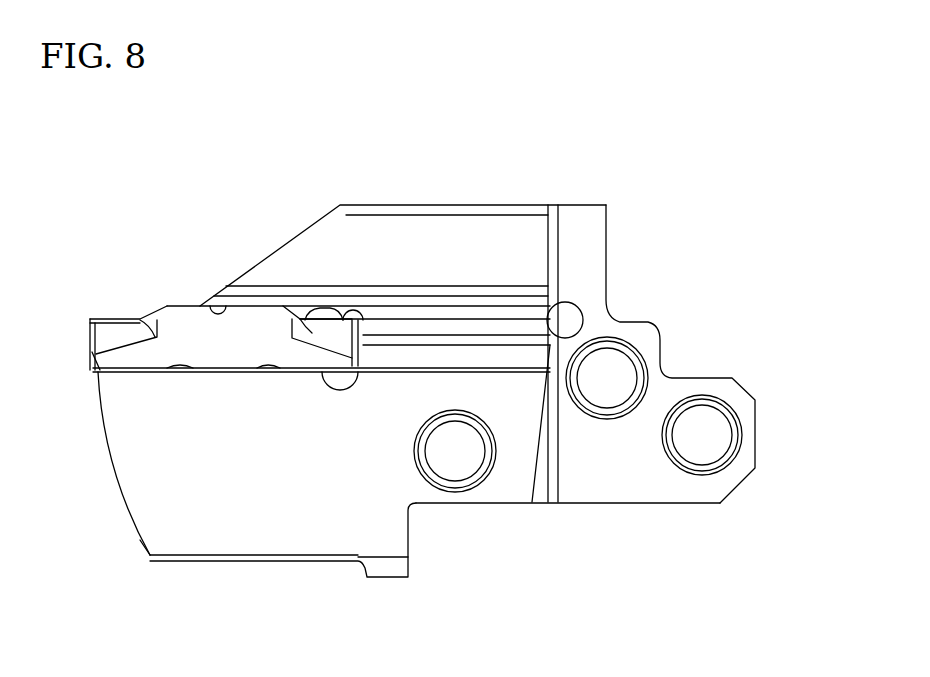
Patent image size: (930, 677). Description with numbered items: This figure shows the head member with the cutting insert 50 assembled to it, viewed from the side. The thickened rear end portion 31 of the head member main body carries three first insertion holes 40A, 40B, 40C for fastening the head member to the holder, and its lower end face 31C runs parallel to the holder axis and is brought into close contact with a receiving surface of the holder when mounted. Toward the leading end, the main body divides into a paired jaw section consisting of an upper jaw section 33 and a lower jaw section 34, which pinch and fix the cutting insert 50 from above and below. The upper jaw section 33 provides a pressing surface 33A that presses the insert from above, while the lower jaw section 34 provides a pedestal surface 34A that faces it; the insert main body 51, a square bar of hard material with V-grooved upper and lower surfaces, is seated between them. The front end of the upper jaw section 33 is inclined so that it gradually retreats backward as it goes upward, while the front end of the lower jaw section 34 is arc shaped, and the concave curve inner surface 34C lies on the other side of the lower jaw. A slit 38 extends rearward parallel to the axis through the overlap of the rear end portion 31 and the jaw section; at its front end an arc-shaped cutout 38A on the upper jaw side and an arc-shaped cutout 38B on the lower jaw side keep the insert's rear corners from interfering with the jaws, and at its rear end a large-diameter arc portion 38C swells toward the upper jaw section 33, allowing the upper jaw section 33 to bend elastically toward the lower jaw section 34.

The rear end portion 31 is at (700, 388).
The lower end face 31C is at (648, 507).
The upper jaw section 33 is at (408, 227).
The pressing surface 33A is at (212, 296).
The lower jaw section 34 is at (293, 543).
The pedestal surface 34A is at (117, 370).
The concave curve inner surface 34C is at (147, 513).
The slit 38 is at (483, 327).
The arc-shaped cutout 38A is at (345, 310).
The arc-shaped cutout 38B is at (345, 384).
The large-diameter arc portion 38C is at (571, 313).
The first insertion hole 40A is at (455, 467).
The first insertion hole 40B is at (622, 378).
The first insertion hole 40C is at (717, 437).
The cutting insert 50 is at (173, 306).
The insert main body 51 is at (203, 348).